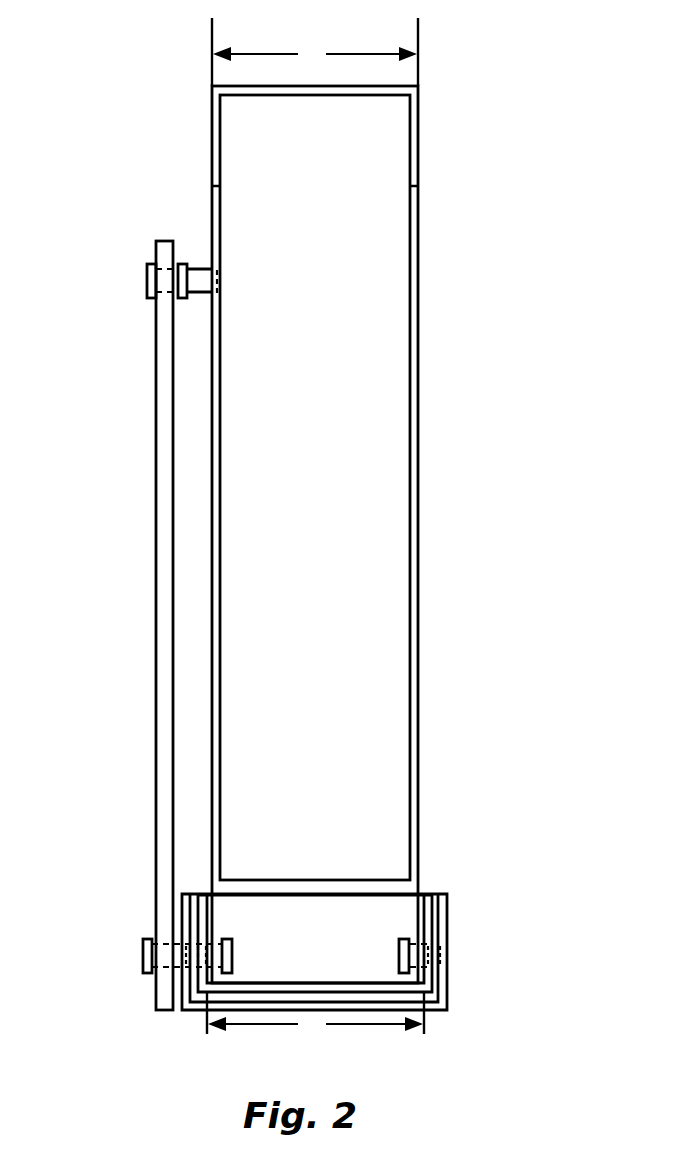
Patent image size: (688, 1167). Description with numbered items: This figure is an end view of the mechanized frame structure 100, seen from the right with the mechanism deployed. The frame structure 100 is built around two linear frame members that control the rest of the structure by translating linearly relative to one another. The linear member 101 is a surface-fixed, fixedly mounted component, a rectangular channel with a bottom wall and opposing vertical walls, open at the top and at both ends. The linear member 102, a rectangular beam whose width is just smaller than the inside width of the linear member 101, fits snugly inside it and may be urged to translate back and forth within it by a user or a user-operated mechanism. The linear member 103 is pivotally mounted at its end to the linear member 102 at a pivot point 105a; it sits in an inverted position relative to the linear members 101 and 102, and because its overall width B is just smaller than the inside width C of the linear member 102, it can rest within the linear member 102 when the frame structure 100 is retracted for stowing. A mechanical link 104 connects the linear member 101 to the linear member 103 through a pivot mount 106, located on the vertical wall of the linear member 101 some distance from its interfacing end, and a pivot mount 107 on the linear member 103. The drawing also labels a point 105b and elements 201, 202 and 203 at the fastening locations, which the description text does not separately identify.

The frame structure 100 is at (526, 222).
The linear member 101 is at (448, 930).
The linear member 102 is at (428, 893).
The linear member 103 is at (418, 350).
The mechanical link 104 is at (157, 589).
The pivot point 105a is at (232, 955).
The second fastener nut 105b is at (399, 955).
The pivot mount 106 is at (143, 957).
The pivot mount 107 is at (146, 280).
The washer 201 is at (183, 263).
The bolt shaft 202 is at (195, 294).
The threaded end 203 is at (220, 281).